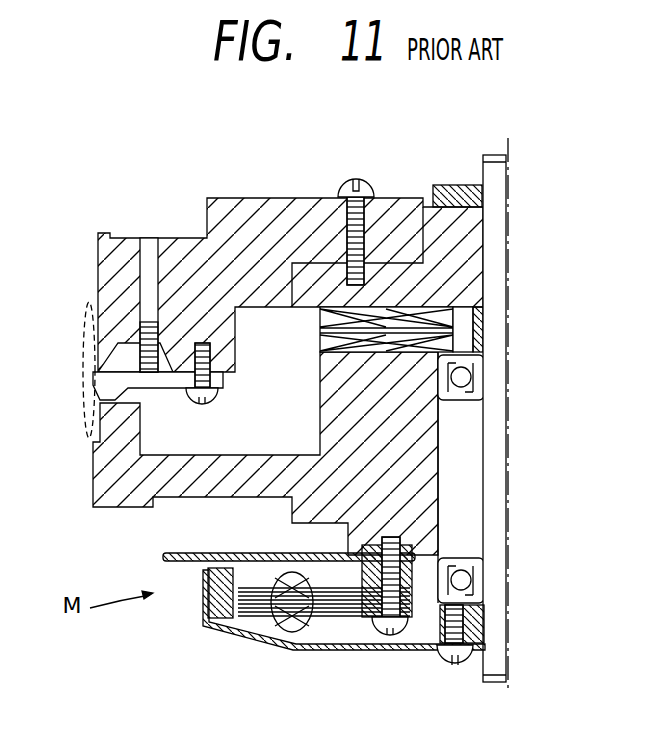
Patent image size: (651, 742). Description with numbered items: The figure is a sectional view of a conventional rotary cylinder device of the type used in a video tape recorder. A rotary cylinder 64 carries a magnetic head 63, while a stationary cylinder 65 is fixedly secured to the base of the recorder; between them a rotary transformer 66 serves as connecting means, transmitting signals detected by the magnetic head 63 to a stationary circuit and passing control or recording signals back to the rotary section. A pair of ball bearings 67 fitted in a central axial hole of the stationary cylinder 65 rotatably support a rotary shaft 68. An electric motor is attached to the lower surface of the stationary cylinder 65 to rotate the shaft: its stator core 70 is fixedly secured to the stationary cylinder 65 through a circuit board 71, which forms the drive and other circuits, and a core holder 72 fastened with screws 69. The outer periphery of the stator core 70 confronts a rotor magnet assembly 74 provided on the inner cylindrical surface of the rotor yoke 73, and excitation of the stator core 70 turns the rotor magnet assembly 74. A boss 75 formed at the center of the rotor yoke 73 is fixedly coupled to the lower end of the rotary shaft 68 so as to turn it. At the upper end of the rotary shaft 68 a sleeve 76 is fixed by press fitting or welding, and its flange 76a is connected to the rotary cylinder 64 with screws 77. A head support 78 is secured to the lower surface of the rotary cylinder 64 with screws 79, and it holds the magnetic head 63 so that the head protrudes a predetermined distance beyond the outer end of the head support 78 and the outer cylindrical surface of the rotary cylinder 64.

The magnetic head 63 is at (97, 412).
The rotary cylinder 64 is at (285, 207).
The stationary cylinder 65 is at (103, 478).
The rotary transformer 66 is at (485, 318).
The ball bearings 67 is at (478, 378).
The rotary shaft 68 is at (495, 202).
The screws 69 is at (397, 618).
The stator core 70 is at (358, 617).
The circuit board 71 is at (190, 561).
The core holder 72 is at (348, 555).
The rotor yoke 73 is at (277, 650).
The rotor magnet assembly 74 is at (213, 618).
The boss 75 is at (483, 648).
The sleeve 76 is at (437, 220).
The flange 76a is at (385, 273).
The screws 77 is at (345, 175).
The head support 78 is at (163, 378).
The screws 79 is at (218, 397).